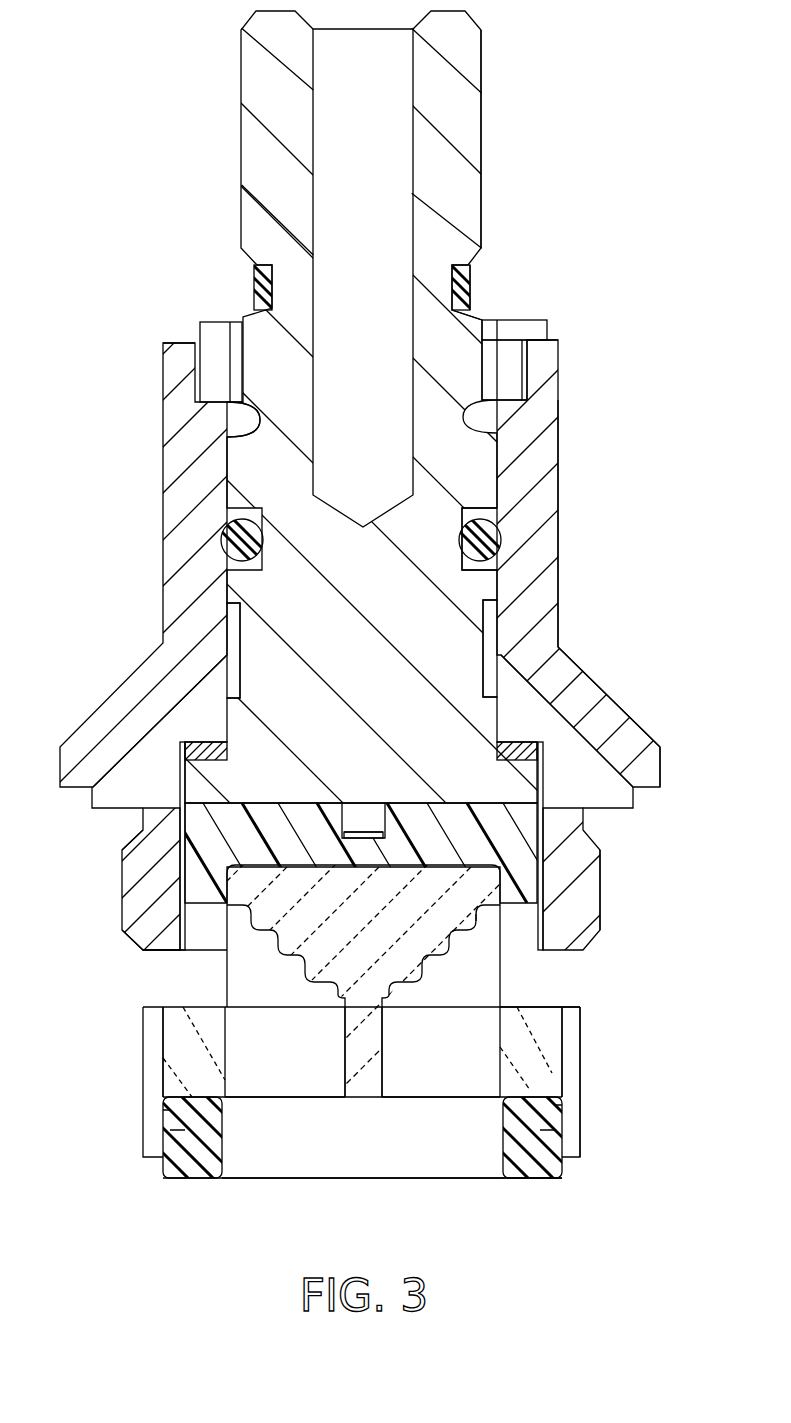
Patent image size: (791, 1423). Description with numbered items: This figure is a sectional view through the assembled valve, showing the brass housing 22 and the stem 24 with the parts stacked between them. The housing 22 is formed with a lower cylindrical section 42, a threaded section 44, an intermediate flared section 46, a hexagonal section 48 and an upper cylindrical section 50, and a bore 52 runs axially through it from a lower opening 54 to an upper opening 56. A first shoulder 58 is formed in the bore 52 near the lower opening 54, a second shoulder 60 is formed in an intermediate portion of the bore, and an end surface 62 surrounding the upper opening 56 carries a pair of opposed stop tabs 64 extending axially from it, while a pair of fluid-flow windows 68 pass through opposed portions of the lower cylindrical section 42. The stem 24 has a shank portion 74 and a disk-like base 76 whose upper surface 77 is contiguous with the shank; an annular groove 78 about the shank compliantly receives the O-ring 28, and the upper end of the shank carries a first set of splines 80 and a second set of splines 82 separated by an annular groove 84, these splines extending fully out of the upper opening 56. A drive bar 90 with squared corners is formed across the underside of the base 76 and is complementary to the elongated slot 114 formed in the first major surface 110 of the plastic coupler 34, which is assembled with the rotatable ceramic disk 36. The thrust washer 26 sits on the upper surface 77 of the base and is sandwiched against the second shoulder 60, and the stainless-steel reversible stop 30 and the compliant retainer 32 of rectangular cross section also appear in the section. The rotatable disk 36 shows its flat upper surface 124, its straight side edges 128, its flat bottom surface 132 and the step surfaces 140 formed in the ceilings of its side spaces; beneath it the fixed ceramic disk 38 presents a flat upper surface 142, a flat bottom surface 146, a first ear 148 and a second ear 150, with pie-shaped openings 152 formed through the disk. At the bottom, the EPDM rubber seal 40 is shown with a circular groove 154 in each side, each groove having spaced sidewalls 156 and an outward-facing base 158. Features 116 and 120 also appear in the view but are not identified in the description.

The housing 22 is at (151, 632).
The stem 24 is at (484, 57).
The thrust washer 26 is at (205, 745).
The O-ring 28 is at (482, 540).
The reversible stop 30 is at (507, 308).
The retainer 32 is at (472, 286).
The coupler 34 is at (140, 835).
The rotatable ceramic disk 36 is at (215, 960).
The fixed ceramic disk 38 is at (373, 1110).
The bottom seal 40 is at (515, 1192).
The lower cylindrical section 42 is at (580, 1130).
The threaded section 44 is at (600, 882).
The intermediate flared section 46 is at (618, 706).
The hexagonal section 48 is at (560, 560).
The upper cylindrical section 50 is at (558, 402).
The bore 52 is at (485, 662).
The lower opening 54 is at (562, 1160).
The upper opening 56 is at (222, 332).
The first shoulder 58 is at (175, 1158).
The second shoulder 60 is at (656, 745).
The end surface 62 is at (240, 402).
The stop tabs 64 is at (178, 343).
The fluid-flow windows 68 is at (163, 965).
The shank portion 74 is at (457, 584).
The base 76 is at (515, 790).
The upper surface 77 is at (168, 817).
The annular groove 78 is at (500, 522).
The first set of splines 80 is at (481, 118).
The second set of splines 82 is at (535, 322).
The annular groove 84 is at (465, 270).
The drive bar 90 is at (470, 830).
The first major surface 110 is at (560, 803).
The elongated slot 114 is at (225, 690).
The outer surface 116 is at (578, 900).
The sleeve 120 is at (543, 845).
The flat upper surface 124 is at (170, 862).
The straight side edges 128 is at (180, 905).
The flat bottom surface 132 is at (265, 1098).
The step surfaces 140 is at (410, 982).
The flat upper surface 142 is at (560, 1007).
The flat bottom surface 146 is at (410, 1100).
The first ear 148 is at (545, 1037).
The second ear 150 is at (182, 1025).
The pie-shaped openings 152 is at (470, 1100).
The circular groove 154 is at (163, 1120).
The sidewalls 156 is at (170, 1112).
The base 158 is at (365, 1168).